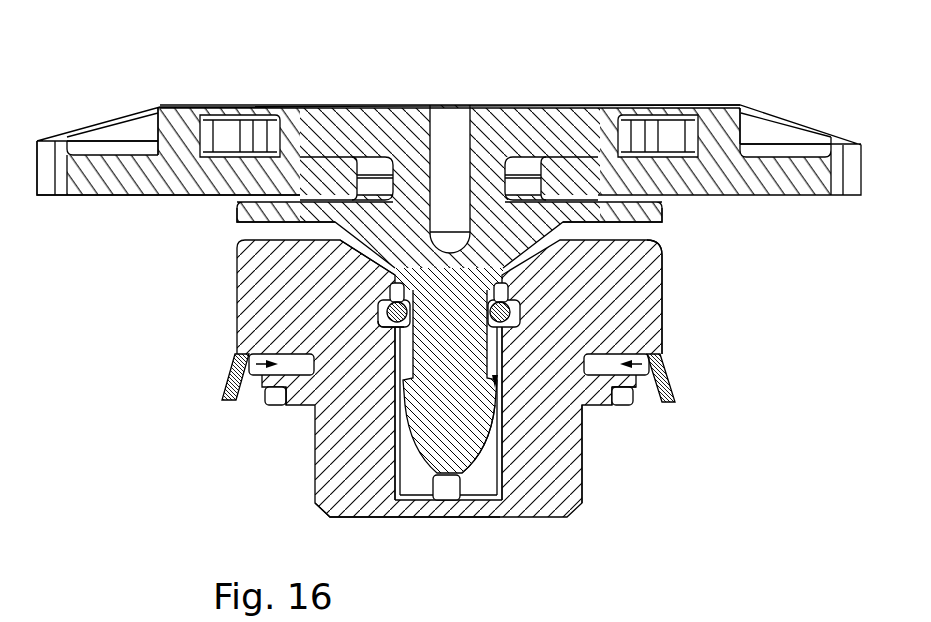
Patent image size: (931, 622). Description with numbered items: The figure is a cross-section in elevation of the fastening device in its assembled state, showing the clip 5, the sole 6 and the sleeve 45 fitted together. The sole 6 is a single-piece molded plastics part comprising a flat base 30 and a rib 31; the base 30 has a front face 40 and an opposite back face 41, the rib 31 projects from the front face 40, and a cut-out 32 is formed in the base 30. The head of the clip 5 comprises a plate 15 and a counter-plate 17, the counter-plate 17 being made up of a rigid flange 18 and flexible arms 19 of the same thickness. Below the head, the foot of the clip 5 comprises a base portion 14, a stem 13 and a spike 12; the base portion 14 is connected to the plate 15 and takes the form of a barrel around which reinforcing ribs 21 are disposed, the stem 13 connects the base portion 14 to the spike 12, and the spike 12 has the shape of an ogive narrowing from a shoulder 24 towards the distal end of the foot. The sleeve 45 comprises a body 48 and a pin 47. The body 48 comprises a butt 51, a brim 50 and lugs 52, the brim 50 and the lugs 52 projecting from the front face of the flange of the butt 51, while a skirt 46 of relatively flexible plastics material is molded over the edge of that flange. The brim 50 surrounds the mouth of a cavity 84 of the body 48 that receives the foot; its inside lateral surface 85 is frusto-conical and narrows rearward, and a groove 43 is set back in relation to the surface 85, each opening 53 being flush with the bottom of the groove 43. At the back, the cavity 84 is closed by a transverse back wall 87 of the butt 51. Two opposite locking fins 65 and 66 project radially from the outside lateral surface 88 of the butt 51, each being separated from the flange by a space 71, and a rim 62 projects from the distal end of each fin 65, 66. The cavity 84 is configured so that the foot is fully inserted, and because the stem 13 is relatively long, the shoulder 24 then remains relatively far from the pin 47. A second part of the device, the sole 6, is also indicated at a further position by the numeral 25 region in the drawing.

The clip 5 is at (523, 74).
The sole 6 is at (775, 227).
The spike 12 is at (430, 457).
The stem 13 is at (410, 347).
The base portion 14 is at (385, 253).
The plate 15 is at (240, 212).
The counter-plate 17 is at (545, 91).
The rigid flange 18 is at (367, 167).
The flexible arms 19 is at (227, 125).
The reinforcing ribs 21 is at (398, 233).
The shoulder 24 is at (505, 412).
The ring 25 is at (638, 203).
The flat base 30 is at (137, 172).
The rib 31 is at (183, 115).
The cut-out 32 is at (353, 163).
The front face 40 is at (99, 152).
The back face 41 is at (86, 197).
The groove 43 is at (385, 318).
The sleeve 45 is at (773, 318).
The skirt 46 is at (675, 392).
The pin 47 is at (565, 320).
The body 48 is at (294, 488).
The brim 50 is at (560, 272).
The butt 51 is at (350, 500).
The lugs 52 is at (630, 323).
The openings 53 is at (382, 307).
The rim 62 is at (287, 400).
The locking fin 65 is at (268, 398).
The locking fin 66 is at (618, 390).
The space 71 is at (238, 362).
The cavity 84 is at (483, 470).
The inside lateral surface 85 is at (560, 268).
The transverse back wall 87 is at (430, 508).
The outside lateral surface 88 is at (585, 473).